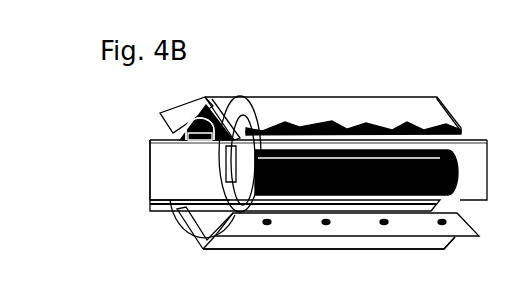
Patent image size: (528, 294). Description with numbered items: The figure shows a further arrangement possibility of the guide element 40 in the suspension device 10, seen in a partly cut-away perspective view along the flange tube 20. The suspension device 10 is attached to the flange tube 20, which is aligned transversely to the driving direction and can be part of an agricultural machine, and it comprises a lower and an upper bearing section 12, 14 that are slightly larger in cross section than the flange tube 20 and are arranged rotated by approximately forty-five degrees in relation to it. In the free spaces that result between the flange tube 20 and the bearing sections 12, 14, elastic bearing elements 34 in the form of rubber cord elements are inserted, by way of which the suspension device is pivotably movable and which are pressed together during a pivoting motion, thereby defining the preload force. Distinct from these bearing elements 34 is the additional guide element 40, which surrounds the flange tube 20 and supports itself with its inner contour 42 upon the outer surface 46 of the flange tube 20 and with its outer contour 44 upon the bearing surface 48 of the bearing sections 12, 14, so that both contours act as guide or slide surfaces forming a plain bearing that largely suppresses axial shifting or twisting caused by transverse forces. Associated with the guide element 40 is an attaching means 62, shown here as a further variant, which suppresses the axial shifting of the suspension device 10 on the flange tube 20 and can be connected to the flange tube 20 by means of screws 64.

The suspension device 10 is at (404, 83).
The lower bearing section 12 is at (193, 240).
The upper bearing section 14 is at (193, 240).
The flange tube 20 is at (167, 181).
The outer surface of the flange tube 46 is at (167, 181).
The elastic bearing elements 34 is at (359, 157).
The guide element 40 is at (250, 146).
The inner contour 42 is at (180, 204).
The outer contour 44 is at (268, 226).
The bearing surface 48 is at (200, 113).
The attaching means 62 is at (172, 143).
The screws 64 is at (147, 135).